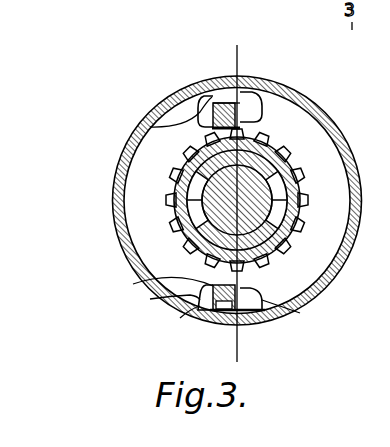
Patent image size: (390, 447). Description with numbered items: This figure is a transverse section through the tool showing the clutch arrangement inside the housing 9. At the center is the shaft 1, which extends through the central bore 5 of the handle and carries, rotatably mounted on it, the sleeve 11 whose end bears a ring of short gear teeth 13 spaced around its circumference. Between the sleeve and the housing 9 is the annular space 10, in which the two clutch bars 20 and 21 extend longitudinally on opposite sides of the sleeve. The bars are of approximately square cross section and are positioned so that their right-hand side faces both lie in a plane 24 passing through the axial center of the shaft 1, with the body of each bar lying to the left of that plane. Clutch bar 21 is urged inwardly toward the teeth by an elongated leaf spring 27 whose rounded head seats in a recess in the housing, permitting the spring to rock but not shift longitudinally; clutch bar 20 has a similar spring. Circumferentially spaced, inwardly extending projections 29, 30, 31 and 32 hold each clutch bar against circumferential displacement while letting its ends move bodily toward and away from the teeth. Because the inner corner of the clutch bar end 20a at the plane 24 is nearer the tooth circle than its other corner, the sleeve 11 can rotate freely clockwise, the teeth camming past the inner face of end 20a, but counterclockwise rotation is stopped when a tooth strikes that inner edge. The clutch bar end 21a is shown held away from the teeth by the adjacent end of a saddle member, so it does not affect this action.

The shaft 1 is at (277, 200).
The central bore 5 is at (313, 203).
The housing 9 is at (115, 176).
The annular space 10 is at (132, 200).
The sleeve 11 is at (272, 258).
The gear teeth 13 is at (305, 176).
The clutch bar 20 is at (198, 100).
The clutch bar end 20a is at (212, 100).
The clutch bar 21 is at (133, 284).
The clutch bar end 21a is at (180, 318).
The plane 24 is at (245, 333).
The spring 27 is at (220, 312).
The projection 29 is at (256, 88).
The projection 30 is at (150, 127).
The projection 31 is at (150, 299).
The projection 32 is at (300, 313).